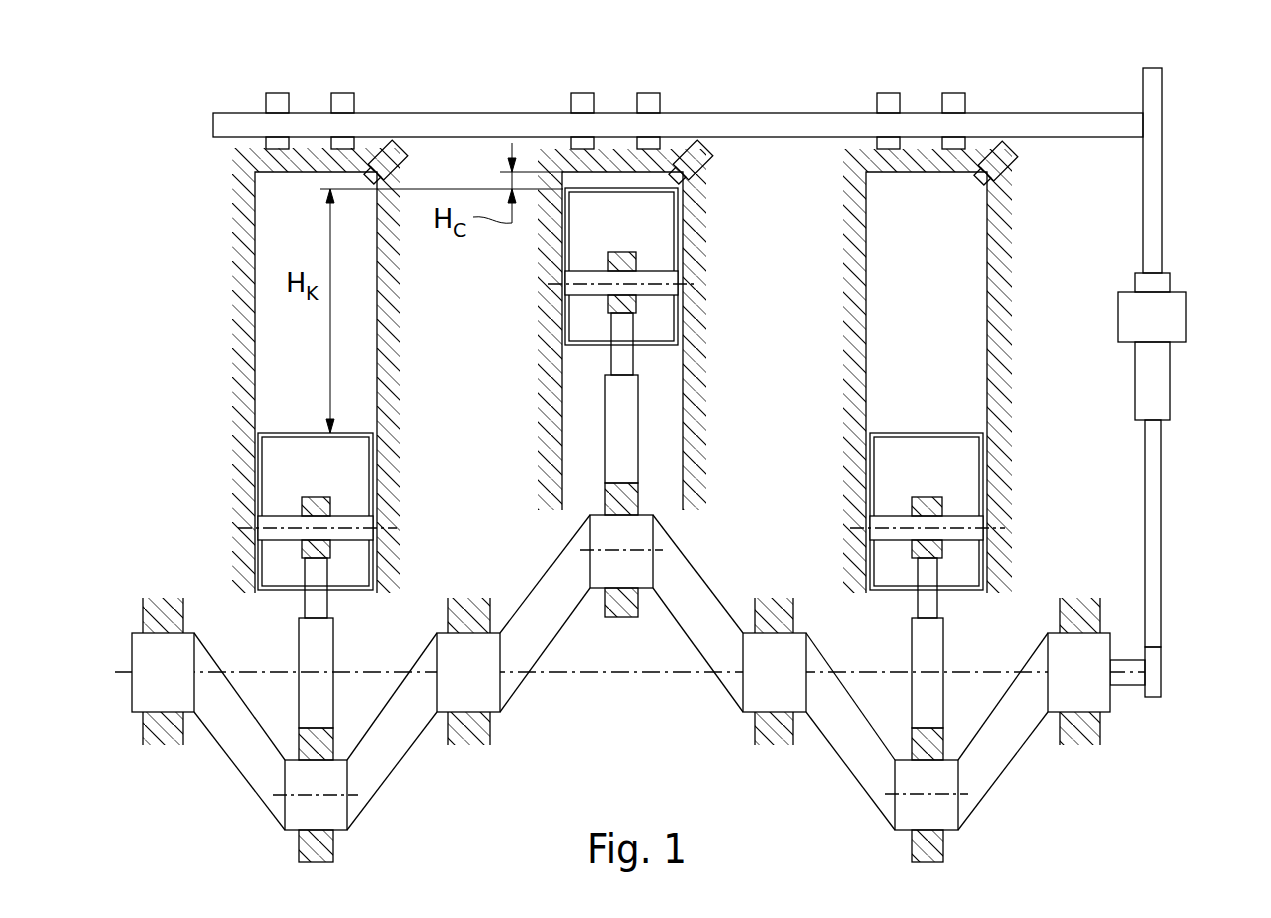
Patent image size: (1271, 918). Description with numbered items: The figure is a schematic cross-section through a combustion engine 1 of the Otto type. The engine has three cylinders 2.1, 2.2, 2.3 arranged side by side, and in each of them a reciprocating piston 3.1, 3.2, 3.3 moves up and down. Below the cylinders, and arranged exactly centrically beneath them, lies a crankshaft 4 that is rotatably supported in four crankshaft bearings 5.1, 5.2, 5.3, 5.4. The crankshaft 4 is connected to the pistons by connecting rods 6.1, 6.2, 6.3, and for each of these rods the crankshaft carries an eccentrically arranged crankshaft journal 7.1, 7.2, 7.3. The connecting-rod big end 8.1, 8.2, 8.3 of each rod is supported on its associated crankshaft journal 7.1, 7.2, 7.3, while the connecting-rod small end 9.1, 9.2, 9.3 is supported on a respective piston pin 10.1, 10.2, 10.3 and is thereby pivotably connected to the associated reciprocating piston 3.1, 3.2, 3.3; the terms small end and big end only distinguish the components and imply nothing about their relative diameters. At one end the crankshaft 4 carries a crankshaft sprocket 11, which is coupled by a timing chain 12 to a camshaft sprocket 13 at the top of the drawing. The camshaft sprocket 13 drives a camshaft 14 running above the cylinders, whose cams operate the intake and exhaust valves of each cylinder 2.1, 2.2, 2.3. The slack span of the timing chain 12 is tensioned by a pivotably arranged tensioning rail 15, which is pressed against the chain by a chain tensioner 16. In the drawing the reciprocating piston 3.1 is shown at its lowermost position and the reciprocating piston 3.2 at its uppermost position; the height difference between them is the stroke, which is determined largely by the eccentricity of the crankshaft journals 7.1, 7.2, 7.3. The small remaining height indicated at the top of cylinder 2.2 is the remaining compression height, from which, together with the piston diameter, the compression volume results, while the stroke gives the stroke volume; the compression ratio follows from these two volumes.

The combustion engine 1 is at (755, 78).
The cylinder 2.1 is at (227, 298).
The cylinder 2.2 is at (537, 368).
The cylinder 2.3 is at (842, 280).
The reciprocating piston 3.1 is at (258, 467).
The reciprocating piston 3.2 is at (562, 257).
The reciprocating piston 3.3 is at (868, 477).
The crankshaft 4 is at (237, 780).
The crankshaft bearing 5.1 is at (137, 718).
The crankshaft bearing 5.2 is at (503, 723).
The crankshaft bearing 5.3 is at (742, 718).
The crankshaft bearing 5.4 is at (1115, 718).
The connecting rod 6.1 is at (299, 645).
The connecting rod 6.2 is at (605, 430).
The connecting rod 6.3 is at (912, 657).
The crankshaft journal 7.1 is at (337, 818).
The crankshaft journal 7.2 is at (600, 578).
The crankshaft journal 7.3 is at (947, 820).
The connecting-rod big end 8.1 is at (305, 820).
The connecting-rod big end 8.2 is at (618, 570).
The connecting-rod big end 8.3 is at (930, 820).
The connecting-rod small end 9.1 is at (323, 545).
The connecting-rod small end 9.2 is at (622, 296).
The connecting-rod small end 9.3 is at (927, 545).
The piston pin 10.1 is at (270, 535).
The piston pin 10.2 is at (663, 288).
The piston pin 10.3 is at (963, 533).
The crankshaft sprocket 11 is at (1161, 670).
The timing chain 12 is at (1155, 552).
The camshaft sprocket 13 is at (1162, 93).
The camshaft 14 is at (1057, 123).
The tensioning rail 15 is at (1165, 383).
The chain tensioner 16 is at (1177, 312).